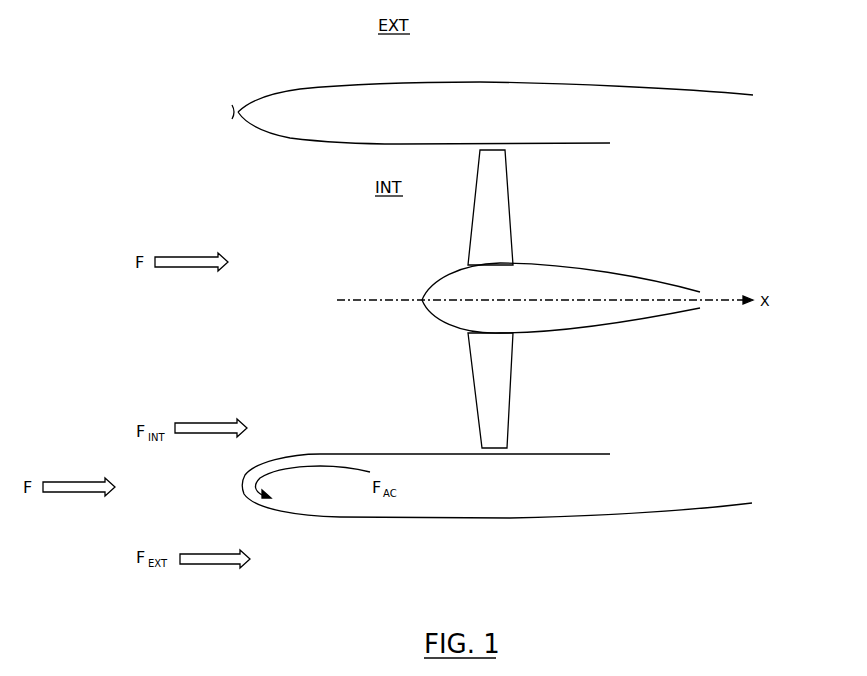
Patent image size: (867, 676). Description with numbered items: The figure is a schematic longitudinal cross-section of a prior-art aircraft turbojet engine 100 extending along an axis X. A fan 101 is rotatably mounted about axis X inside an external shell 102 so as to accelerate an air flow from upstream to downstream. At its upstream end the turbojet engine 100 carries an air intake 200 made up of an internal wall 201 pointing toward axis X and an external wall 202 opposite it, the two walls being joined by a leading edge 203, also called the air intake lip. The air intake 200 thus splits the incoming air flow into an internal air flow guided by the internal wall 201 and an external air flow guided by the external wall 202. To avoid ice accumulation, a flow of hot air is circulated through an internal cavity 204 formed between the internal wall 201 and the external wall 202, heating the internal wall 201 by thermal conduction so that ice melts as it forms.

The turbojet engine 100 is at (727, 177).
The fan 101 is at (484, 211).
The external shell 102 is at (598, 145).
The air intake 200 is at (443, 285).
The internal wall 201 is at (437, 157).
The external wall 202 is at (272, 90).
The leading edge 203 is at (238, 112).
The internal cavity 204 is at (327, 496).